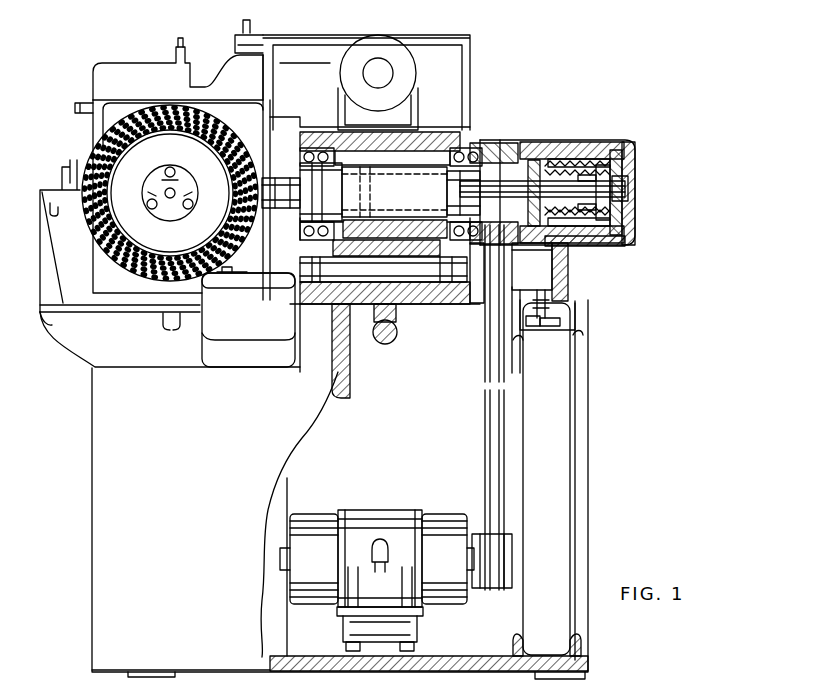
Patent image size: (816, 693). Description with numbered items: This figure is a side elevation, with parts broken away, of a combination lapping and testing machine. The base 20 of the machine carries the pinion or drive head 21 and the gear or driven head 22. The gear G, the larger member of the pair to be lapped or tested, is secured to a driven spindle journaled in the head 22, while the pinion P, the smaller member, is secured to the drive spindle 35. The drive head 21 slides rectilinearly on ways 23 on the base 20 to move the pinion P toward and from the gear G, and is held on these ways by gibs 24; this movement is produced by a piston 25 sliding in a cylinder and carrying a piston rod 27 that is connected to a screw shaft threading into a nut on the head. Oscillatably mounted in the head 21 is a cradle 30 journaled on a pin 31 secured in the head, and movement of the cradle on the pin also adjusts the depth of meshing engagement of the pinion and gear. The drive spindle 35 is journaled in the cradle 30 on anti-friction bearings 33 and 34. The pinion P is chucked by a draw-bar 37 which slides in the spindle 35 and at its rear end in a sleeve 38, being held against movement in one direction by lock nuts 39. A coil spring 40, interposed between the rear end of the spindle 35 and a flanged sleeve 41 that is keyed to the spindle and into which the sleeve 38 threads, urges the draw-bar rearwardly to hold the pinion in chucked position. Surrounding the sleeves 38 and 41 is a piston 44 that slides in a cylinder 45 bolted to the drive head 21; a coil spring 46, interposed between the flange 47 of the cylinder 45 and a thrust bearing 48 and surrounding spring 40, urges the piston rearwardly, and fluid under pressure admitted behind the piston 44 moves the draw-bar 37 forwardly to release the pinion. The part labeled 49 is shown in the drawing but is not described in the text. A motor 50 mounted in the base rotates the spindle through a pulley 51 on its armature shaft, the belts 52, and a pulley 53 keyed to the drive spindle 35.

The base 20 is at (118, 553).
The pinion or drive head 21 is at (543, 315).
The gear or driven head 22 is at (118, 88).
The ways 23 is at (358, 304).
The gibs 24 is at (549, 321).
The piston 25 is at (535, 318).
The piston rod 27 is at (393, 326).
The cradle 30 is at (433, 137).
The pin 31 is at (437, 290).
The anti-friction bearing 33 is at (318, 138).
The anti-friction bearing 34 is at (467, 143).
The drive spindle 35 is at (390, 192).
The draw-bar 37 is at (513, 162).
The sleeve 38 is at (593, 167).
The lock nuts 39 is at (633, 197).
The coil spring 40 is at (531, 160).
The flanged sleeve 41 is at (587, 167).
The piston 44 is at (573, 160).
The cylinder 45 is at (571, 272).
The coil spring 46 is at (570, 150).
The flange 47 is at (532, 266).
The thrust bearing 48 is at (604, 149).
The cover plate 49 is at (615, 247).
The motor 50 is at (376, 524).
The pulley 51 is at (507, 559).
The belts 52 is at (485, 478).
The pulley 53 is at (472, 244).
The gear G is at (222, 121).
The pinion P is at (262, 165).